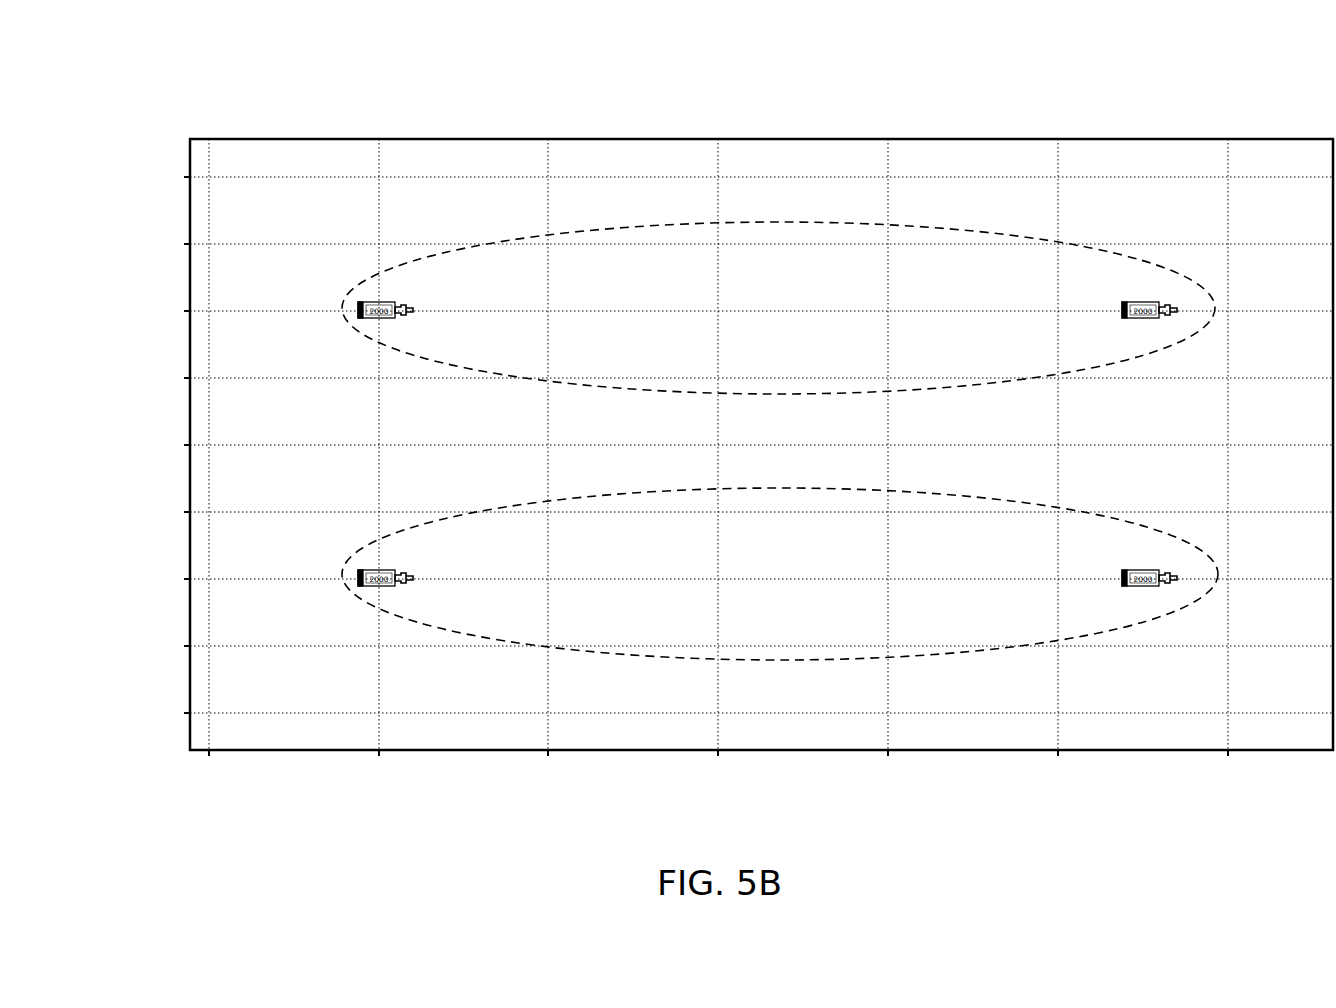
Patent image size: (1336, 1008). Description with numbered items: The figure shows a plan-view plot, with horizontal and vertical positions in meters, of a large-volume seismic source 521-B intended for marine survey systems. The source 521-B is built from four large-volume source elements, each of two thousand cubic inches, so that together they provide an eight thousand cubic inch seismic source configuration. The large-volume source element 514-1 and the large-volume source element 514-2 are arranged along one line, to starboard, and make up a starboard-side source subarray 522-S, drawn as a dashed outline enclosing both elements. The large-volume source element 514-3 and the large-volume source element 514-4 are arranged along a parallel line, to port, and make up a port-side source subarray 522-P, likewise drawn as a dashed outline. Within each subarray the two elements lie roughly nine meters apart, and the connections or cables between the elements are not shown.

The large-volume seismic source 521-B is at (1186, 70).
The starboard-side source subarray 522-S is at (341, 308).
The port-side source subarray 522-P is at (343, 576).
The large-volume source element 514-1 is at (402, 284).
The large-volume source element 514-2 is at (1145, 279).
The large-volume source element 514-3 is at (393, 549).
The large-volume source element 514-4 is at (1145, 546).